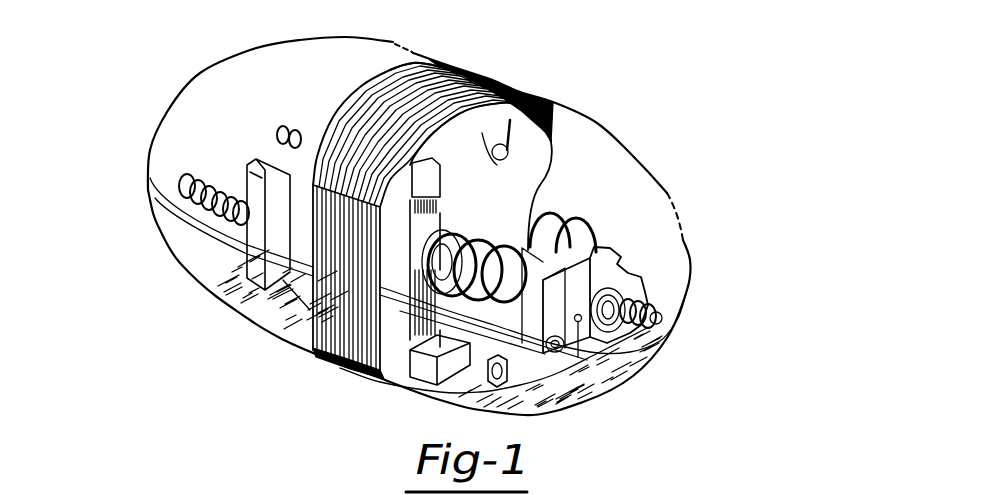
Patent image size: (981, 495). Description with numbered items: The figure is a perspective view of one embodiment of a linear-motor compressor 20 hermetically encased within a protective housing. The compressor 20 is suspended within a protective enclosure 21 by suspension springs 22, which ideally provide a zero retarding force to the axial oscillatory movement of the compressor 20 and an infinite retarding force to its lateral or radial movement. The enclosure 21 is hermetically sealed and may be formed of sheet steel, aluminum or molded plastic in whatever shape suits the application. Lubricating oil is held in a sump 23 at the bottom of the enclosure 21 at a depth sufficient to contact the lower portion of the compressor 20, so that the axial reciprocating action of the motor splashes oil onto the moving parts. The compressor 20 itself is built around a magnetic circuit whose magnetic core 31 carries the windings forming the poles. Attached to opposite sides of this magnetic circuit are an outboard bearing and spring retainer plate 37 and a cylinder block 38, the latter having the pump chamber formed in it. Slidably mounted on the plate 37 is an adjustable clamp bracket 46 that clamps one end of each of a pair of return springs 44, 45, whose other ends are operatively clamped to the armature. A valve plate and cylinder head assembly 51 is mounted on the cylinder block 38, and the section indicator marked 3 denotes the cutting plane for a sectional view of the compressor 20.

The linear-motor compressor 20 is at (425, 254).
The protective enclosure 21 is at (415, 120).
The suspension springs 22 is at (473, 210).
The sump 23 is at (566, 383).
The magnetic core 31 is at (484, 62).
The outboard bearing and spring retainer plate 37 is at (519, 227).
The cylinder block 38 is at (400, 190).
The return spring 44 is at (572, 245).
The return spring 45 is at (336, 337).
The adjustable clamp bracket 46 is at (644, 270).
The valve plate and cylinder head assembly 51 is at (258, 293).
The section line 3- 3 is at (451, 197).